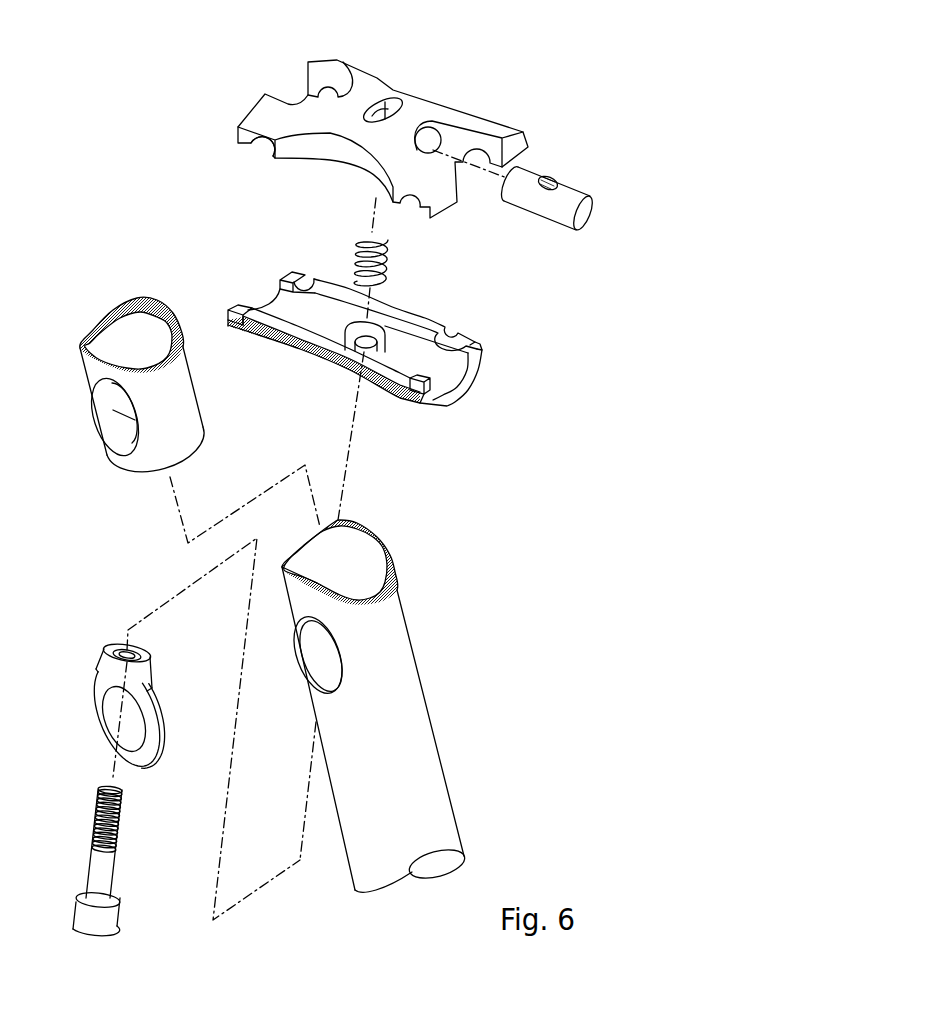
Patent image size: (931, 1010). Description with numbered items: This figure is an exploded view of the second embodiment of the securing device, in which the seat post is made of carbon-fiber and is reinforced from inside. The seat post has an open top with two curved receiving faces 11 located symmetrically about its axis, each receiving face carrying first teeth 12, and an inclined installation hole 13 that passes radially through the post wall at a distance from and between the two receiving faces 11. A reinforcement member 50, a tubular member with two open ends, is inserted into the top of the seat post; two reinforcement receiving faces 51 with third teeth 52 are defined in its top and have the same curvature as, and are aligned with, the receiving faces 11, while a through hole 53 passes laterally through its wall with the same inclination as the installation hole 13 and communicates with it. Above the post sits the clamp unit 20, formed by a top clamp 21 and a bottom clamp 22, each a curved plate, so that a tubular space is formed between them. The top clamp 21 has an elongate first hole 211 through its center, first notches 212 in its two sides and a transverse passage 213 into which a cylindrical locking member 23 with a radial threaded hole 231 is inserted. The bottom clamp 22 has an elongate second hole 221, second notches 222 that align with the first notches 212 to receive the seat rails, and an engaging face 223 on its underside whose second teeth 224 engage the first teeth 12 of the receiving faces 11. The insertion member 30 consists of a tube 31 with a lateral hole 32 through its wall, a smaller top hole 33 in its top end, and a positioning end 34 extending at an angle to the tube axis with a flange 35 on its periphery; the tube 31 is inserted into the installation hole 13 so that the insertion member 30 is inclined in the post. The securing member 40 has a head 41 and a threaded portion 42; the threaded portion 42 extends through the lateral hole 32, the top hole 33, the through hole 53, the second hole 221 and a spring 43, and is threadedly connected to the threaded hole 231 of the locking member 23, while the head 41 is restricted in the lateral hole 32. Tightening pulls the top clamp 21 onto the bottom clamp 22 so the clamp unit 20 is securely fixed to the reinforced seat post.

The receiving face 11 is at (373, 706).
The first teeth 12 is at (356, 706).
The installation hole 13 is at (317, 643).
The clamp unit 20 is at (175, 157).
The top clamp 21 is at (351, 130).
The first hole 211 is at (393, 107).
The first notch 212 is at (260, 146).
The passage 213 is at (432, 138).
The bottom clamp 22 is at (337, 315).
The second hole 221 is at (372, 338).
The second notch 222 is at (305, 280).
The engaging face 223 is at (279, 365).
The second teeth 224 is at (228, 330).
The locking member 23 is at (514, 203).
The threaded hole 231 is at (553, 178).
The insertion member 30 is at (133, 684).
The tube 31 is at (150, 682).
The lateral hole 32 is at (123, 718).
The top hole 33 is at (125, 655).
The positioning end 34 is at (105, 740).
The flange 35 is at (160, 722).
The securing member 40 is at (104, 860).
The head 41 is at (112, 920).
The threaded portion 42 is at (118, 825).
The spring 43 is at (390, 258).
The reinforcement member 50 is at (122, 405).
The reinforcement receiving face 51 is at (112, 315).
The third teeth 52 is at (108, 312).
The through hole 53 is at (118, 410).